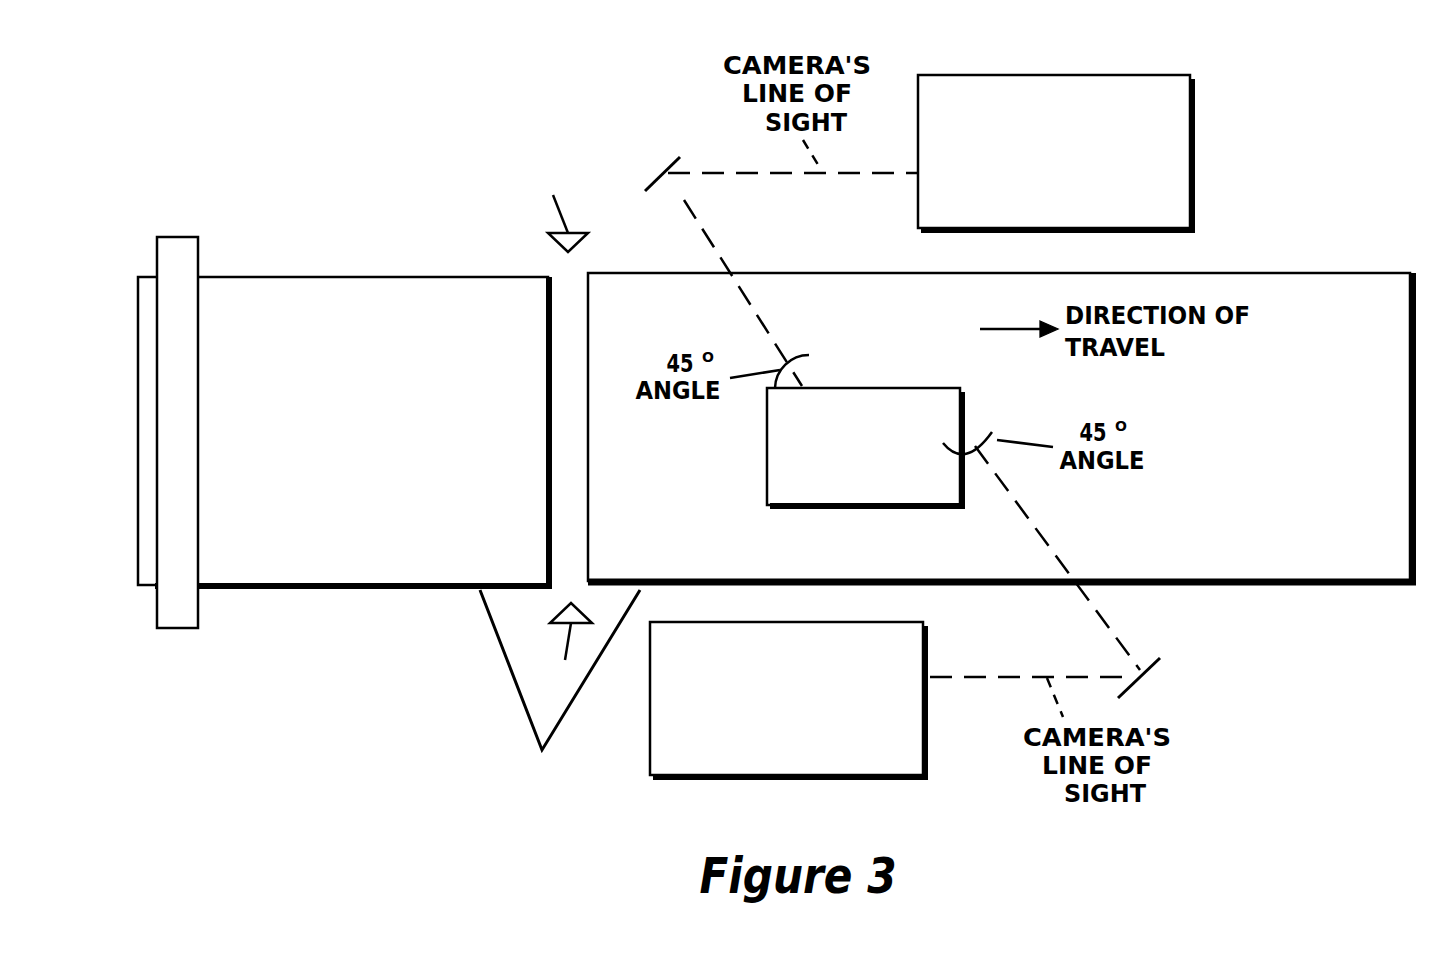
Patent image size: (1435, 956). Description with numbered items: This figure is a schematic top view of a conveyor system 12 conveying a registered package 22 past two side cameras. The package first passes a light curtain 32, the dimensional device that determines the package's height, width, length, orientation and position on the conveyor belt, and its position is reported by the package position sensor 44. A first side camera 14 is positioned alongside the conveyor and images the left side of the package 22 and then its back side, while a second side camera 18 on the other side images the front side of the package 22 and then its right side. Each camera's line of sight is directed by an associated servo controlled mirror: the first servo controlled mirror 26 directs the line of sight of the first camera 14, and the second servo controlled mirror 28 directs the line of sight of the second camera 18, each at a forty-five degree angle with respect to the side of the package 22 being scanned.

The conveyor system 12 is at (777, 528).
The first side camera 14 is at (1196, 152).
The second side camera 18 is at (928, 750).
The registered package 22 is at (898, 388).
The first servo controlled mirror 26 is at (680, 193).
The second servo controlled mirror 28 is at (1147, 668).
The light curtain 32 is at (163, 370).
The package position sensor 44 is at (559, 427).